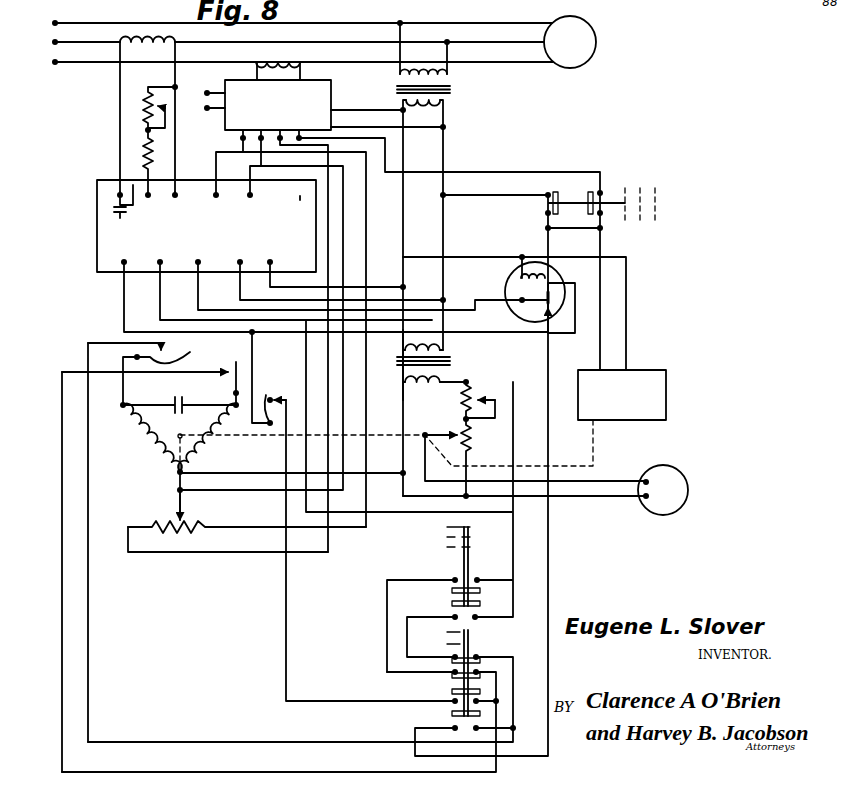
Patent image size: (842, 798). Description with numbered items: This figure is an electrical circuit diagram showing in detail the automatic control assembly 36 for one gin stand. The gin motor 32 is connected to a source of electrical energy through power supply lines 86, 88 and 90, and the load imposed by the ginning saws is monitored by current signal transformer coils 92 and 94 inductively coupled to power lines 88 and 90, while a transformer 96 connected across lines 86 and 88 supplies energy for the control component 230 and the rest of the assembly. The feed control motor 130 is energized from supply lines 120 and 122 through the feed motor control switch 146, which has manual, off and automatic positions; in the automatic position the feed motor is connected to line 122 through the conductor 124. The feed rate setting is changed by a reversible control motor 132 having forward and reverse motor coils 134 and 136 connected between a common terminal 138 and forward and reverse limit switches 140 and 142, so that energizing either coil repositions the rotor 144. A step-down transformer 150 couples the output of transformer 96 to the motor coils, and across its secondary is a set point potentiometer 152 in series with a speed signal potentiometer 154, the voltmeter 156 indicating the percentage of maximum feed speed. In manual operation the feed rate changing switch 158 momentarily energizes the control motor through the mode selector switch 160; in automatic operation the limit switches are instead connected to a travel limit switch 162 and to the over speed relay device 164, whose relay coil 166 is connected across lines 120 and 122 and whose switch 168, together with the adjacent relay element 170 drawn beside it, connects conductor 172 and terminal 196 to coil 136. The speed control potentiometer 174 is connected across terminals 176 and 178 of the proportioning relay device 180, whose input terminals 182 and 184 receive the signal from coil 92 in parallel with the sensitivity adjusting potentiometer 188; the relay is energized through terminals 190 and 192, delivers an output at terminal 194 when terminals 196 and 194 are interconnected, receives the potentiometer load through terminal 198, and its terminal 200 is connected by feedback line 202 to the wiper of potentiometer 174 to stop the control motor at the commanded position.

The gin motor 32 is at (560, 67).
The automatic control assembly 36 is at (645, 140).
The power supply line 86 is at (83, 23).
The power supply line 88 is at (68, 42).
The power supply line 90 is at (76, 63).
The current signal transformer coil 92 is at (143, 37).
The current signal transformer coil 94 is at (284, 60).
The transformer 96 is at (458, 87).
The supply line 120 is at (395, 168).
The supply line 122 is at (444, 157).
The conductor 124 is at (530, 172).
The feed control motor 130 is at (668, 380).
The reversible control motor 132 is at (150, 452).
The forward motor coil 134 is at (215, 450).
The reverse motor coil 136 is at (145, 438).
The common terminal 138 is at (178, 476).
The forward limit switch 140 is at (236, 386).
The reverse limit switch 142 is at (148, 541).
The rotor 144 is at (387, 402).
The feed motor control switch 146 is at (605, 190).
The step-down transformer 150 is at (450, 364).
The set point potentiometer 152 is at (462, 398).
The speed signal potentiometer 154 is at (470, 442).
The voltmeter 156 is at (663, 516).
The feed rate changing switch 158 is at (450, 568).
The mode selector switch 160 is at (485, 650).
The travel limit switch 162 is at (265, 392).
The over speed relay device 164 is at (540, 326).
The relay coil 166 is at (507, 282).
The switch 168 is at (514, 305).
The tube plate 170 is at (562, 334).
The conductor 172 is at (432, 320).
The speed control potentiometer 174 is at (207, 526).
The terminal 176 is at (300, 200).
The terminal 178 is at (291, 332).
The proportioning relay device 180 is at (90, 234).
The input terminal 182 is at (118, 193).
The input terminal 184 is at (177, 193).
The sensitivity adjusting potentiometer 188 is at (140, 92).
The terminal 190 is at (272, 260).
The terminal 192 is at (242, 260).
The output terminal 194 is at (125, 262).
The terminal 196 is at (200, 264).
The terminal 198 is at (162, 264).
The terminal 200 is at (261, 314).
The feedback line 202 is at (344, 250).
The control component 230 is at (335, 105).